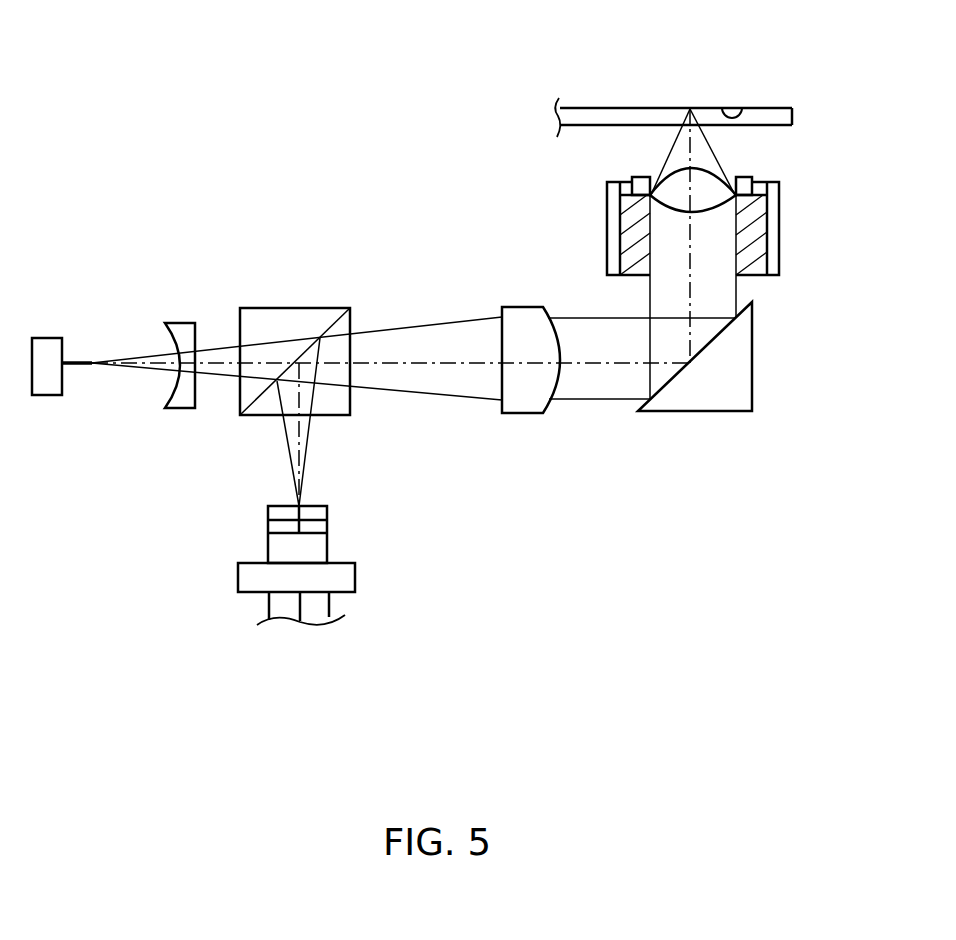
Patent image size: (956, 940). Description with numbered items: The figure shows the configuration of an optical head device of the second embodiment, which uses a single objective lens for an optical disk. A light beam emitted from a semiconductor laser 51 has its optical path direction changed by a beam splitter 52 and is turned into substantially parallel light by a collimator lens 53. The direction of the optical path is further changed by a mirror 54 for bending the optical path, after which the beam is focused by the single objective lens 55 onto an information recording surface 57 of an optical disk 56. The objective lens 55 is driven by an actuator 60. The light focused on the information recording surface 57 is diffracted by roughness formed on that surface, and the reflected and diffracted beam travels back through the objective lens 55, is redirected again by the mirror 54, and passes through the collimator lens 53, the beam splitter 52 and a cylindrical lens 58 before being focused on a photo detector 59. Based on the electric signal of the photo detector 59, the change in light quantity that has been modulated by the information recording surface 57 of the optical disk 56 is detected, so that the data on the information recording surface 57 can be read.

The semiconductor laser 51 is at (355, 578).
The beam splitter 52 is at (310, 327).
The collimator lens 53 is at (525, 310).
The mirror for bending the optical path 54 is at (745, 378).
The single objective lens 55 is at (740, 176).
The optical disk 56 is at (778, 114).
The information recording surface 57 is at (722, 110).
The cylindrical lens 58 is at (183, 332).
The photo detector 59 is at (47, 352).
The actuator 60 is at (758, 227).